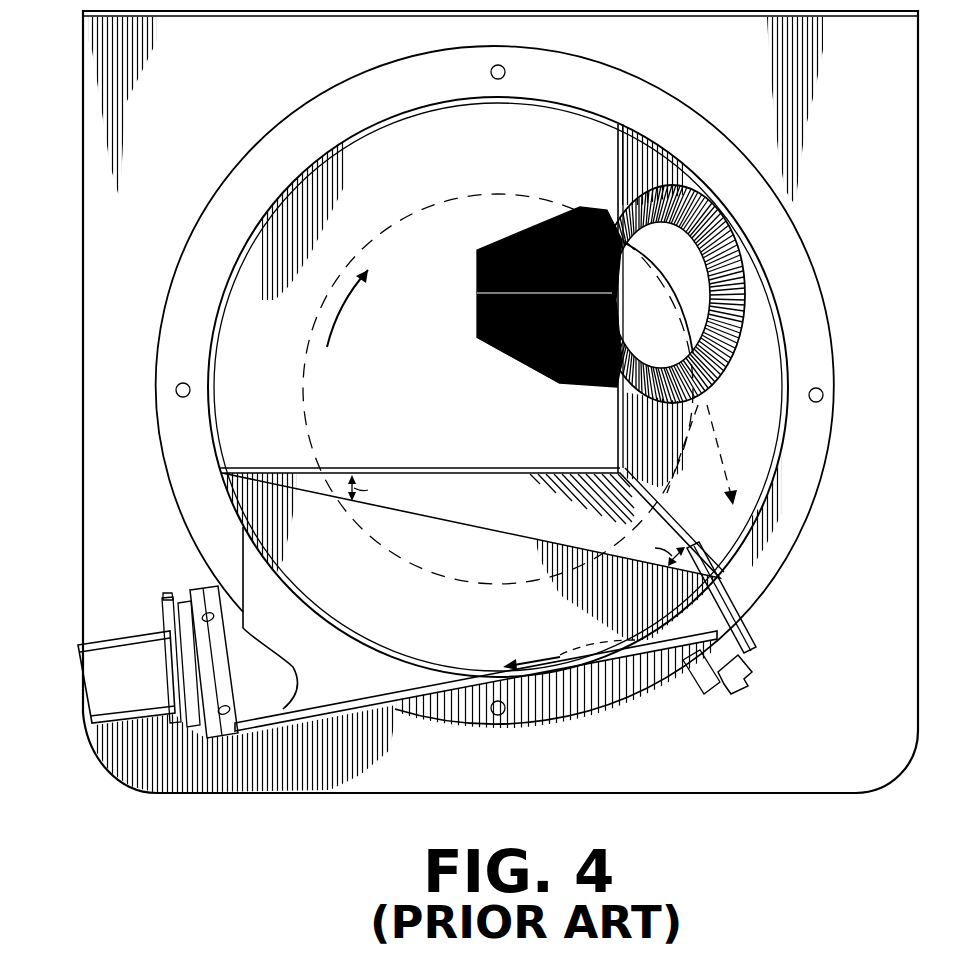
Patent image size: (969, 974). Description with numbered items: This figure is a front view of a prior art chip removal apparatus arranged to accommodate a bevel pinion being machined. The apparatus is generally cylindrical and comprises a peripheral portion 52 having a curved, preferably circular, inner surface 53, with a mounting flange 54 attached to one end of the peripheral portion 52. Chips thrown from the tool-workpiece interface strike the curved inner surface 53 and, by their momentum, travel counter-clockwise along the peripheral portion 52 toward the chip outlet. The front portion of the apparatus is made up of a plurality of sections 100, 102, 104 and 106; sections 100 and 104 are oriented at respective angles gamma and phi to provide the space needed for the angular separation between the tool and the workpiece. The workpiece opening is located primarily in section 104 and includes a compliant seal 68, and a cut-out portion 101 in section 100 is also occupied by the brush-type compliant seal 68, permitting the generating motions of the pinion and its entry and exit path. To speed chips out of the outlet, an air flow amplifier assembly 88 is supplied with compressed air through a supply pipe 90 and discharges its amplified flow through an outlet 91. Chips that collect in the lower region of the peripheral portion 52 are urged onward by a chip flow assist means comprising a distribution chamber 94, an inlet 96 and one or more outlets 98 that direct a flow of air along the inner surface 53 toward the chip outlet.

The peripheral portion 52 is at (305, 160).
The inner surface 53 is at (382, 127).
The mounting flange 54 is at (620, 98).
The compliant seal 68 is at (522, 220).
The front portion section 100 is at (392, 213).
The cut-out portion 101 is at (513, 357).
The front portion section 102 is at (425, 595).
The front portion section 104 is at (785, 415).
The front portion section 106 is at (509, 513).
The supply pipe 90 is at (163, 604).
The outlet 91 is at (122, 705).
The air flow amplifier assembly 88 is at (212, 690).
The distribution chamber 94 is at (753, 637).
The inlet 96 is at (742, 678).
The outlets 98 is at (667, 650).